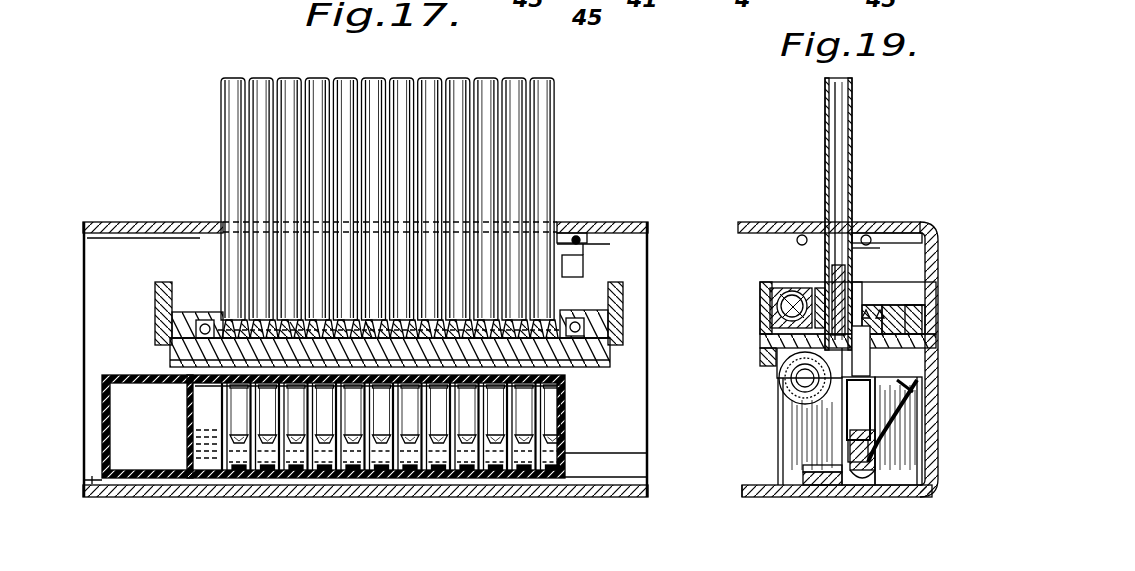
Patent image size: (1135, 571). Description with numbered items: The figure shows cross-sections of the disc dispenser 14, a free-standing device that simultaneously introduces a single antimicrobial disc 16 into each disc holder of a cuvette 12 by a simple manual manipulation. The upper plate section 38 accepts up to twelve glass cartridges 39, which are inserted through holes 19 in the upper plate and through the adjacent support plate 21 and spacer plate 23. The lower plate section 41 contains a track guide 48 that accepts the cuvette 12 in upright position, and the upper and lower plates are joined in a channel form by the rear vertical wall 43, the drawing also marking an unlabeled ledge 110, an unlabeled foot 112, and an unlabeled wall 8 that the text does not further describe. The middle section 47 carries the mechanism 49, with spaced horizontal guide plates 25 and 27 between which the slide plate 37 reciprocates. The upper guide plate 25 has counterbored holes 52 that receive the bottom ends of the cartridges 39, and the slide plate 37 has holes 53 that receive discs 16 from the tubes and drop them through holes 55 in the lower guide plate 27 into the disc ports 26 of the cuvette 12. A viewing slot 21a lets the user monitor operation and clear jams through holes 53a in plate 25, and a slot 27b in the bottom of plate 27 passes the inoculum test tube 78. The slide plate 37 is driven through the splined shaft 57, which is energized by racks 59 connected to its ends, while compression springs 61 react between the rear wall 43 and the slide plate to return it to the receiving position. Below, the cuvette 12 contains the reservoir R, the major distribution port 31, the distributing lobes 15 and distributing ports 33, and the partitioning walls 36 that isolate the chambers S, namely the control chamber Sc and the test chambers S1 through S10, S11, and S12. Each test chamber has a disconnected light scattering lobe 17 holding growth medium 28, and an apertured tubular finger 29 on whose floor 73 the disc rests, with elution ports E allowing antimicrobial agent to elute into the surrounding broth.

In FIG. 17, the cartridge 39 is at (548, 93).
In FIG. 19, the cartridge 39 is at (855, 108).
In FIG. 17, the disc dispenser 14 is at (622, 170).
In FIG. 19, the disc dispenser 14 is at (872, 202).
In FIG. 17, the holes in upper plate 19 is at (292, 232).
In FIG. 19, the holes in upper plate 19 is at (835, 232).
In FIG. 17, the spacer plate 23 is at (576, 240).
In FIG. 19, the spacer plate 23 is at (868, 236).
In FIG. 17, the support plate 21 is at (585, 245).
In FIG. 19, the support plate 21 is at (885, 246).
In FIG. 17, the upper plate section 38 is at (620, 228).
In FIG. 19, the upper plate section 38 is at (765, 228).
In FIG. 17, the viewing slot 21a is at (587, 246).
In FIG. 17, the slide plate 37 is at (574, 261).
In FIG. 19, the slide plate 37 is at (772, 335).
In FIG. 17, the rack 59 is at (204, 320).
In FIG. 19, the rack 59 is at (822, 315).
In FIG. 17, the upper guide plate 25 is at (206, 312).
In FIG. 19, the upper guide plate 25 is at (886, 320).
In FIG. 17, the compression spring 61 is at (160, 322).
In FIG. 19, the compression spring 61 is at (917, 310).
In FIG. 17, the antimicrobial disc 16 is at (295, 325).
In FIG. 19, the antimicrobial disc 16 is at (856, 300).
In FIG. 17, the splined shaft 57 is at (370, 325).
In FIG. 19, the splined shaft 57 is at (790, 290).
In FIG. 17, the holes in slide plate 53 is at (400, 326).
In FIG. 19, the holes in slide plate 53 is at (892, 297).
In FIG. 17, the lower guide plate 27 is at (612, 358).
In FIG. 19, the lower guide plate 27 is at (770, 348).
In FIG. 17, the holes in lower guide plate 55 is at (548, 352).
In FIG. 19, the holes in lower guide plate 55 is at (809, 376).
In FIG. 17, the distributing port 33 is at (250, 390).
In FIG. 17, the tubular finger 29 is at (520, 415).
In FIG. 19, the tubular finger 29 is at (846, 424).
In FIG. 17, the rear vertical wall 43 is at (627, 437).
In FIG. 17, the major distribution port 31 is at (187, 390).
In FIG. 17, the ledge 110 is at (647, 453).
In FIG. 17, the support foot 112 is at (96, 480).
In FIG. 17, the reservoir R is at (138, 455).
In FIG. 17, the control chamber Sc is at (208, 458).
In FIG. 17, the test chamber S1 is at (242, 458).
In FIG. 17, the growth medium 28 is at (352, 468).
In FIG. 19, the growth medium 28 is at (852, 486).
In FIG. 17, the partitioning wall 36 is at (380, 470).
In FIG. 17, the elution port E is at (412, 462).
In FIG. 17, the floor of disc holder 73 is at (470, 470).
In FIG. 19, the floor of disc holder 73 is at (885, 486).
In FIG. 17, the test chamber S10 is at (492, 460).
In FIG. 17, the test chamber S11 is at (526, 460).
In FIG. 17, the test chamber S12 is at (546, 462).
In FIG. 17, the lower plate section 41 is at (640, 492).
In FIG. 19, the lower plate section 41 is at (768, 490).
In FIG. 19, the mechanism 49 is at (750, 265).
In FIG. 19, the middle section 47 is at (760, 300).
In FIG. 19, the counterbored hole 52 is at (870, 310).
In FIG. 19, the holes in upper guide plate 53a is at (877, 297).
In FIG. 19, the slot 27b is at (770, 366).
In FIG. 19, the test tube 78 is at (784, 392).
In FIG. 19, the cuvette 12 is at (760, 428).
In FIG. 19, the disc port 26 is at (845, 412).
In FIG. 19, the light scattering lobe 17 is at (803, 469).
In FIG. 19, the track guide 48 is at (816, 490).
In FIG. 19, the chamber S is at (845, 488).
In FIG. 19, the distributing lobe 15 is at (912, 490).
In FIG. 19, the wall 8 is at (922, 398).